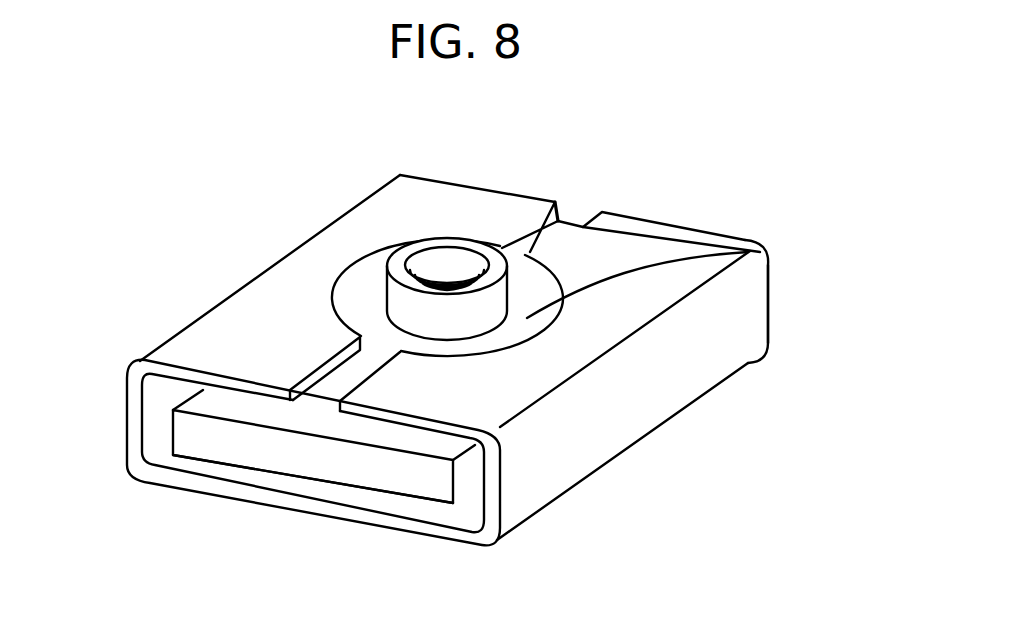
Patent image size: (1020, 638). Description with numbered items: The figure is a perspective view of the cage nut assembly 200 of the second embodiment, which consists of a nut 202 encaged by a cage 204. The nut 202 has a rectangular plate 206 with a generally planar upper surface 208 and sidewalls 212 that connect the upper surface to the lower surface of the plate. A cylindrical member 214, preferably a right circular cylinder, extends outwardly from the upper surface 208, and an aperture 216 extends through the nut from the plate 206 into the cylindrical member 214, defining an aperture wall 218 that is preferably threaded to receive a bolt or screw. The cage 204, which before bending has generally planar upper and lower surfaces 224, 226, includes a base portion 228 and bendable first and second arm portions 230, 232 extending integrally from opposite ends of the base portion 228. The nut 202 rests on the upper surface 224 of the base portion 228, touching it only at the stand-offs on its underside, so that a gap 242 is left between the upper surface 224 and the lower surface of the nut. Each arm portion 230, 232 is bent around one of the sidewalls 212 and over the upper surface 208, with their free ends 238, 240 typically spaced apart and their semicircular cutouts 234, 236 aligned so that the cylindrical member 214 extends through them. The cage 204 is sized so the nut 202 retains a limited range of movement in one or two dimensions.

The cage nut assembly 200 is at (786, 231).
The nut 202 is at (236, 447).
The cage 204 is at (725, 342).
The rectangular plate 206 is at (213, 437).
The upper surface 208 is at (560, 206).
The sidewalls 212 is at (470, 482).
The cylindrical member 214 is at (412, 243).
The aperture 216 is at (452, 260).
The aperture wall 218 is at (468, 270).
The upper surface 224 is at (203, 467).
The lower surface 226 is at (563, 458).
The base portion 228 is at (250, 505).
The first arm portion 230 is at (745, 296).
The second arm portion 232 is at (215, 350).
The semicircular cutout 234 is at (771, 253).
The semicircular cutout 236 is at (368, 297).
The free end 238 is at (604, 213).
The free end 240 is at (327, 360).
The gap 242 is at (337, 487).